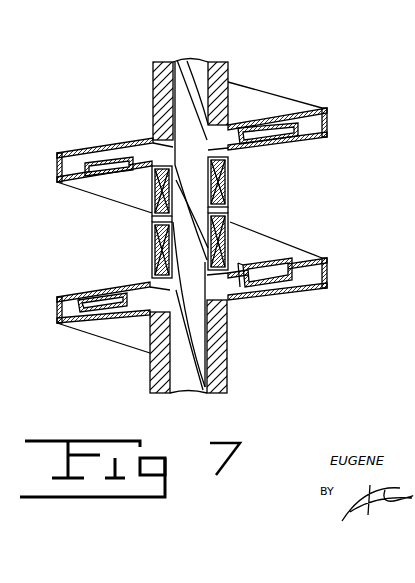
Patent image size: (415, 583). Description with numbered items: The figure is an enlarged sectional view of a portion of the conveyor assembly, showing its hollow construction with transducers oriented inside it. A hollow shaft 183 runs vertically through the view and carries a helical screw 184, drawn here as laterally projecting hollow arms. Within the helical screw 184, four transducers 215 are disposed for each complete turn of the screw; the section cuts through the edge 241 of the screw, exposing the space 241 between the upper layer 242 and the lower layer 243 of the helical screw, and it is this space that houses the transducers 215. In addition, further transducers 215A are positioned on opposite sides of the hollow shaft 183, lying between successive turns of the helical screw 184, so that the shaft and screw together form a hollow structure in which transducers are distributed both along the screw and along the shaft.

The hollow shaft 183 is at (228, 70).
The helical screw 184 is at (312, 104).
The upper layer of the helical screw 242 is at (323, 108).
The edge of the helical screw 241 is at (330, 118).
The lower layer of the helical screw 243 is at (323, 133).
The transducers 215 is at (285, 146).
The transducers 215A is at (230, 222).